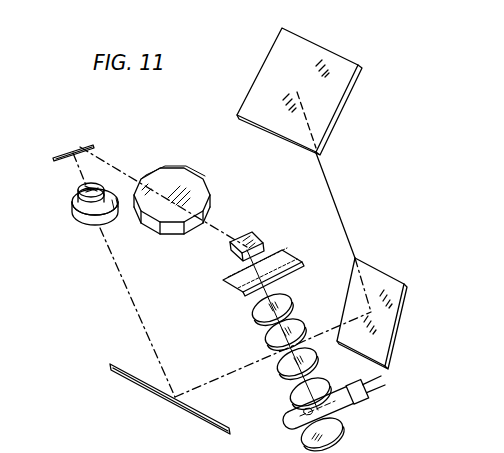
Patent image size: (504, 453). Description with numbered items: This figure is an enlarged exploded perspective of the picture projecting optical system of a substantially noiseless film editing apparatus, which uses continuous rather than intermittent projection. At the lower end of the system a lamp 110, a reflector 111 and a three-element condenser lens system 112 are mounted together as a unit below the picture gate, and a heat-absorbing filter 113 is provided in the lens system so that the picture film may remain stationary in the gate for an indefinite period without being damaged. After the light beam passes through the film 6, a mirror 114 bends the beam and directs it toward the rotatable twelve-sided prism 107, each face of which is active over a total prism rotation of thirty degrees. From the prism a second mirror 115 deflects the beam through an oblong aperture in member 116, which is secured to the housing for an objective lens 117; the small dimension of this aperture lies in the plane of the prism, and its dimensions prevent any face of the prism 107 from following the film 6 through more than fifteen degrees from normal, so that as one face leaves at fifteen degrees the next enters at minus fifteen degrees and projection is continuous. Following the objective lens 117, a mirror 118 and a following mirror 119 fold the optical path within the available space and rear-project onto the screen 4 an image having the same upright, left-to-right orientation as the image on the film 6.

The screen 4 is at (335, 92).
The film 6 is at (286, 271).
The rotatable twelve-sided prism 107 is at (196, 187).
The lamp 110 is at (358, 411).
The reflector 111 is at (345, 431).
The three-element condenser lens system 112 is at (285, 350).
The heat-absorbing filter 113 is at (262, 346).
The mirror 114 is at (257, 245).
The second mirror 115 is at (82, 143).
The aperture member 116 is at (84, 199).
The objective lens 117 is at (88, 222).
The mirror 118 is at (185, 417).
The following mirror 119 is at (381, 326).